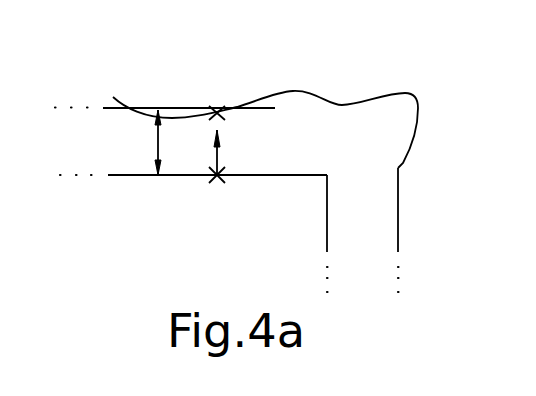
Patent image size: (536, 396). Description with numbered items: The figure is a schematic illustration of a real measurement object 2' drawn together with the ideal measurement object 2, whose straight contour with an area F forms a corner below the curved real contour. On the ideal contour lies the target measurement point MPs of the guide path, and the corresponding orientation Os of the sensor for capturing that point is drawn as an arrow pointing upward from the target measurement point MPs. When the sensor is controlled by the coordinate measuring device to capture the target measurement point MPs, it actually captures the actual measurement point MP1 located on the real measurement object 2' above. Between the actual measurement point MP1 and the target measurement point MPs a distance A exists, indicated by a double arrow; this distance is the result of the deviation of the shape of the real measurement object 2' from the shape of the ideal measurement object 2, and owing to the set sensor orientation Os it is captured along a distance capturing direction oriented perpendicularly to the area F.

The ideal measurement object 2 is at (217, 207).
The real measurement object 2' is at (265, 105).
The area F is at (303, 175).
The distance A is at (157, 147).
The orientation of the sensor Os is at (221, 157).
The actual measurement point MP1 is at (217, 108).
The target measurement point MPs is at (219, 180).